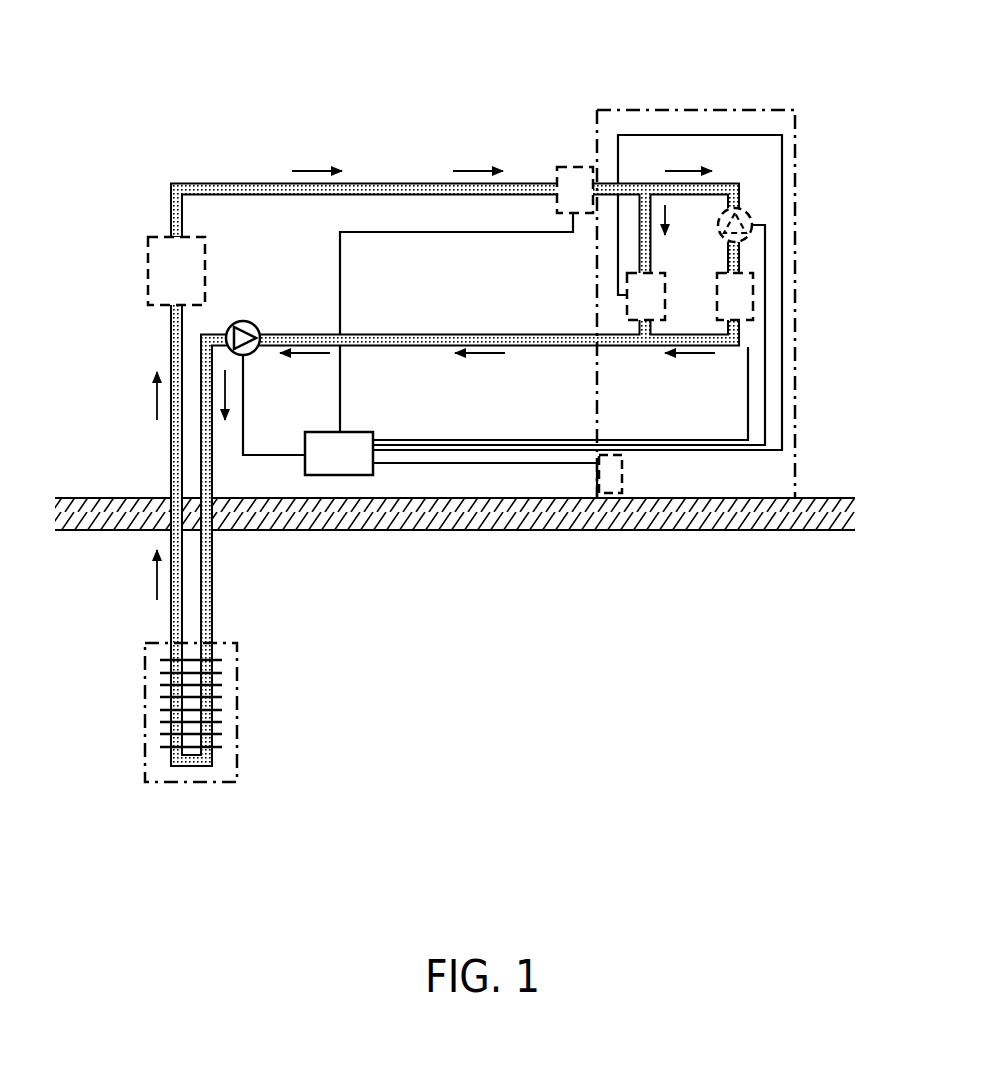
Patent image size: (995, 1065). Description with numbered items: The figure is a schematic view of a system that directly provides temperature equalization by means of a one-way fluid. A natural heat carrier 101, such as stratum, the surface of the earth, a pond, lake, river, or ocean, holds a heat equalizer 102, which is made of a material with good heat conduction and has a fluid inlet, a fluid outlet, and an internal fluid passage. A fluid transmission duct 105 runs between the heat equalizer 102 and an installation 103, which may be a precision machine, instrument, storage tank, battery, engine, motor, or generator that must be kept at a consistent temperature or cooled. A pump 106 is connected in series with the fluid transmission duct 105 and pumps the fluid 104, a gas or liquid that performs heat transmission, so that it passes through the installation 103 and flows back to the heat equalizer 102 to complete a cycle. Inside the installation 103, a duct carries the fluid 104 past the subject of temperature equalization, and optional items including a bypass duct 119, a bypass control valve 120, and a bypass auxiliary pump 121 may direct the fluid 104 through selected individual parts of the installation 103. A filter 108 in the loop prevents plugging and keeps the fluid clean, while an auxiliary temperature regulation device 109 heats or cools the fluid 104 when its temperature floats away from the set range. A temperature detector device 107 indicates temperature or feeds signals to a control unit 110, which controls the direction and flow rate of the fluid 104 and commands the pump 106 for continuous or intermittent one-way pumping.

The natural heat carrier 101 is at (440, 535).
The heat equalizer 102 is at (218, 782).
The installation 103 is at (708, 108).
The fluid 104 is at (243, 192).
The fluid transmission duct 105 is at (365, 185).
The pump 106 is at (247, 322).
The temperature detector device 107 is at (622, 480).
The filter 108 is at (148, 254).
The auxiliary temperature regulation device 109 is at (565, 167).
The control unit 110 is at (360, 432).
The bypass duct 119 is at (638, 243).
The bypass control valve 120 is at (665, 289).
The bypass auxiliary pump 121 is at (750, 212).